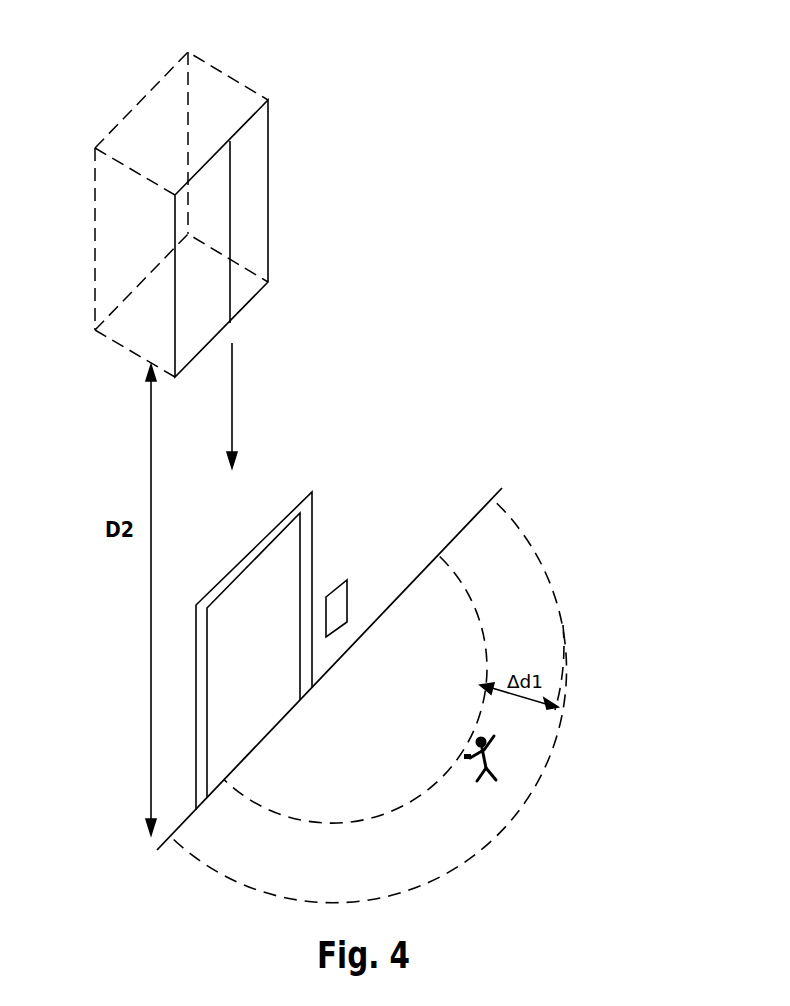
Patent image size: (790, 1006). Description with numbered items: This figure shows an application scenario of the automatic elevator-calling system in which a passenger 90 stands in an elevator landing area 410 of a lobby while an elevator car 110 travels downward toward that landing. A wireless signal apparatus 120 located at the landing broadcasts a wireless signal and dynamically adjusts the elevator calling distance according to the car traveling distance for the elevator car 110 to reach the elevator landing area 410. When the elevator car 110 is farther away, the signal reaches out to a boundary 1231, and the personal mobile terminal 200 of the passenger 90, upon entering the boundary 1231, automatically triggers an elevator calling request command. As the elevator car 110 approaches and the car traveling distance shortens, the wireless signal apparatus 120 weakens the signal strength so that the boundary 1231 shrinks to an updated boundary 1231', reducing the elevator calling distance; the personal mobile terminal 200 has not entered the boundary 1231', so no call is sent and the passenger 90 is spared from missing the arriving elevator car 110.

The elevator car 110 is at (224, 71).
The wireless signal apparatus 120 is at (341, 628).
The elevator landing area 410 is at (537, 593).
The boundary 1231 is at (602, 667).
The boundary 1231' is at (388, 690).
The passenger 90 is at (490, 745).
The personal mobile terminal 200 is at (468, 755).